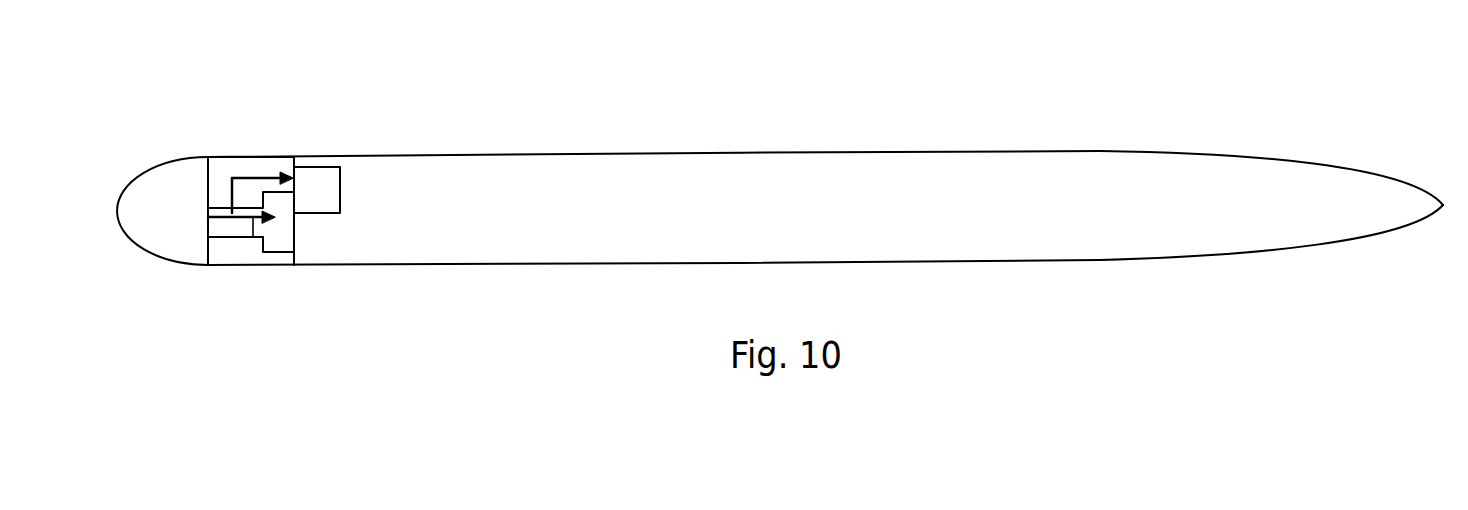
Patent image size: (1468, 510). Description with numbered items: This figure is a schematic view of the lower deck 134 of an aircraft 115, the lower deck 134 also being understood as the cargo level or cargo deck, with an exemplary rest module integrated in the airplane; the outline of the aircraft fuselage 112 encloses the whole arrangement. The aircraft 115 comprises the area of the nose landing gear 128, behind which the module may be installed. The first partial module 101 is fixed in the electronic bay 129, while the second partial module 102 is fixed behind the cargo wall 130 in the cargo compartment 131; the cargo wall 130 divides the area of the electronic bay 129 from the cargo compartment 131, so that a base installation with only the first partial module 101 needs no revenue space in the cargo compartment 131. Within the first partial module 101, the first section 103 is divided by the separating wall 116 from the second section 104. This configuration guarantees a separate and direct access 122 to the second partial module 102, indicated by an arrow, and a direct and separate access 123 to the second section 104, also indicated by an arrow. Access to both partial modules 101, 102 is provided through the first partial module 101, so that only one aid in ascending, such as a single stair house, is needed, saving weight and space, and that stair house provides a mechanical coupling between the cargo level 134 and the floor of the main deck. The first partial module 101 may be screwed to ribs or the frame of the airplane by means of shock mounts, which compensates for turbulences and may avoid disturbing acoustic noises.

The first partial module 101 is at (262, 190).
The second partial module 102 is at (316, 178).
The first section 103 is at (221, 207).
The second section 104 is at (284, 242).
The capsule housing 112 is at (1258, 170).
The aircraft 115 is at (1102, 150).
The separating wall 116 is at (218, 228).
The access 122 is at (273, 163).
The direct and separate access 123 is at (253, 237).
The nose landing gear 128 is at (176, 228).
The electronic bay 129 is at (270, 200).
The cargo wall 130 is at (297, 257).
The cargo compartment 131 is at (359, 184).
The lower deck 134 is at (799, 175).